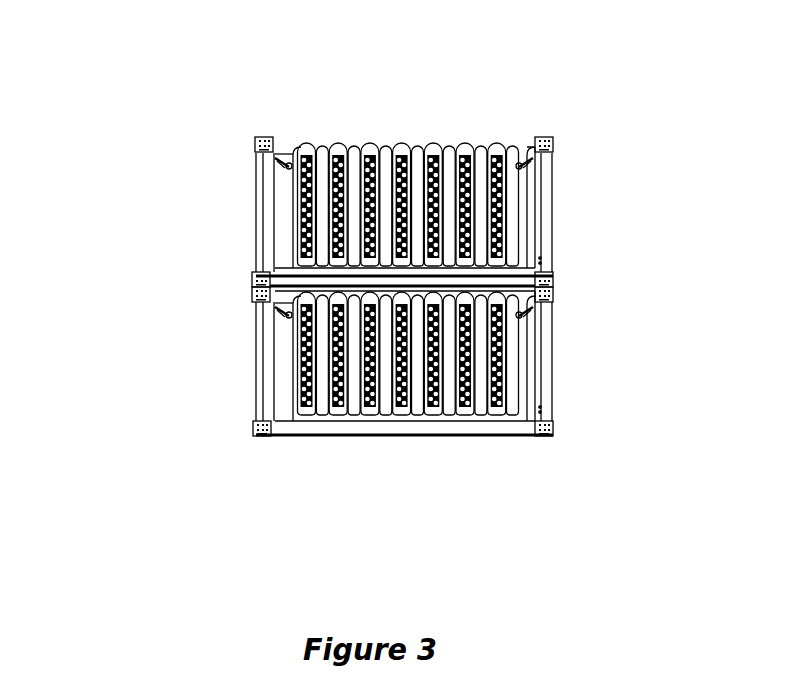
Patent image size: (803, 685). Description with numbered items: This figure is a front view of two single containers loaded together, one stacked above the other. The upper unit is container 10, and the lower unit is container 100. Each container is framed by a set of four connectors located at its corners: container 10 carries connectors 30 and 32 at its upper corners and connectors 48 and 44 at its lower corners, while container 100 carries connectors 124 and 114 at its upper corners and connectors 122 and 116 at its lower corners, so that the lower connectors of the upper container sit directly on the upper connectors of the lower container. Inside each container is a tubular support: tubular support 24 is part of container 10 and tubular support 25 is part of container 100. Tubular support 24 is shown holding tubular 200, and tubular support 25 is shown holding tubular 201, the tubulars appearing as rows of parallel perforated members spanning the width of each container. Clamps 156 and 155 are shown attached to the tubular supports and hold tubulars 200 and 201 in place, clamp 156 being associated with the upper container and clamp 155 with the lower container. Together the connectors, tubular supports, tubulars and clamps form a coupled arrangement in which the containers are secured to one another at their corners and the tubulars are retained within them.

The container 10 is at (195, 187).
The container 100 is at (250, 358).
The tubular support 24 is at (287, 232).
The tubular support 25 is at (283, 398).
The connector 30 is at (255, 143).
The connector 32 is at (553, 145).
The connector 48 is at (252, 281).
The connector 44 is at (553, 278).
The connector 124 is at (252, 294).
The connector 114 is at (553, 294).
The connector 122 is at (253, 431).
The connector 116 is at (553, 433).
The clamp 156 is at (303, 150).
The clamp 155 is at (309, 408).
The tubular 200 is at (467, 150).
The tubular 201 is at (435, 412).